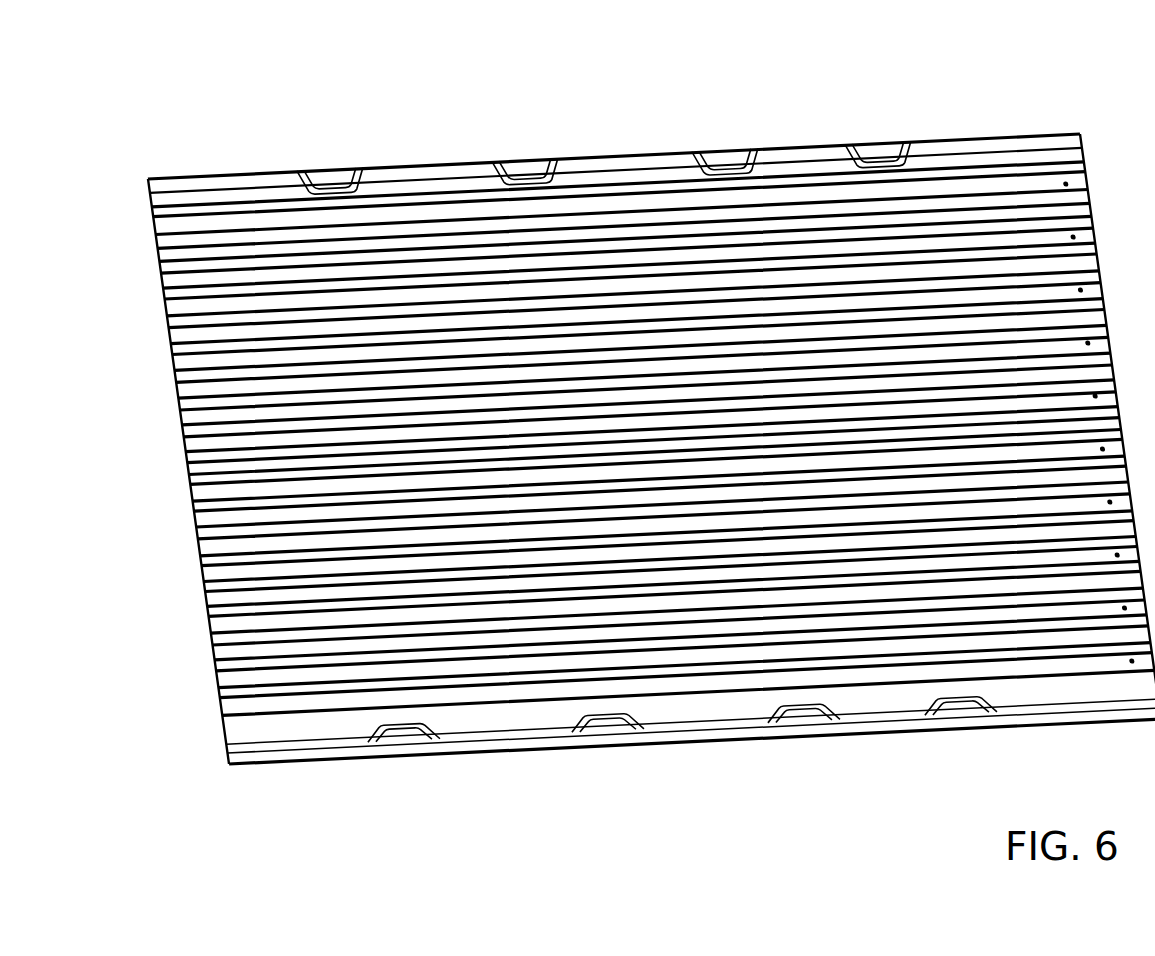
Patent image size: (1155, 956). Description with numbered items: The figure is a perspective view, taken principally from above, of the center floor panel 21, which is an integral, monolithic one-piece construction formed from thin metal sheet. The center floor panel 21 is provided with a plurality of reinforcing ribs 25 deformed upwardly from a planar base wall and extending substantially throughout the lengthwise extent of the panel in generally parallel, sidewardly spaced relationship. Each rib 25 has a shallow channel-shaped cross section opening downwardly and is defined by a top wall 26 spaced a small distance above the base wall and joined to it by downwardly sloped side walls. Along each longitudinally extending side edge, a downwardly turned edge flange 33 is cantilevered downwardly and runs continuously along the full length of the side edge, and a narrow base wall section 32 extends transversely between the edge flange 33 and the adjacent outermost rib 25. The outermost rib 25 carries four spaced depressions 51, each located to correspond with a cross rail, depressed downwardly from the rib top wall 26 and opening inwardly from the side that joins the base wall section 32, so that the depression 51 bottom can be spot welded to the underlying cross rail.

The center floor panel 21 is at (973, 133).
The reinforcing ribs 25 is at (298, 740).
The top wall 26 is at (610, 187).
The base wall section 32 is at (575, 165).
The edge flange 33 is at (510, 752).
The depression 51 is at (331, 190).